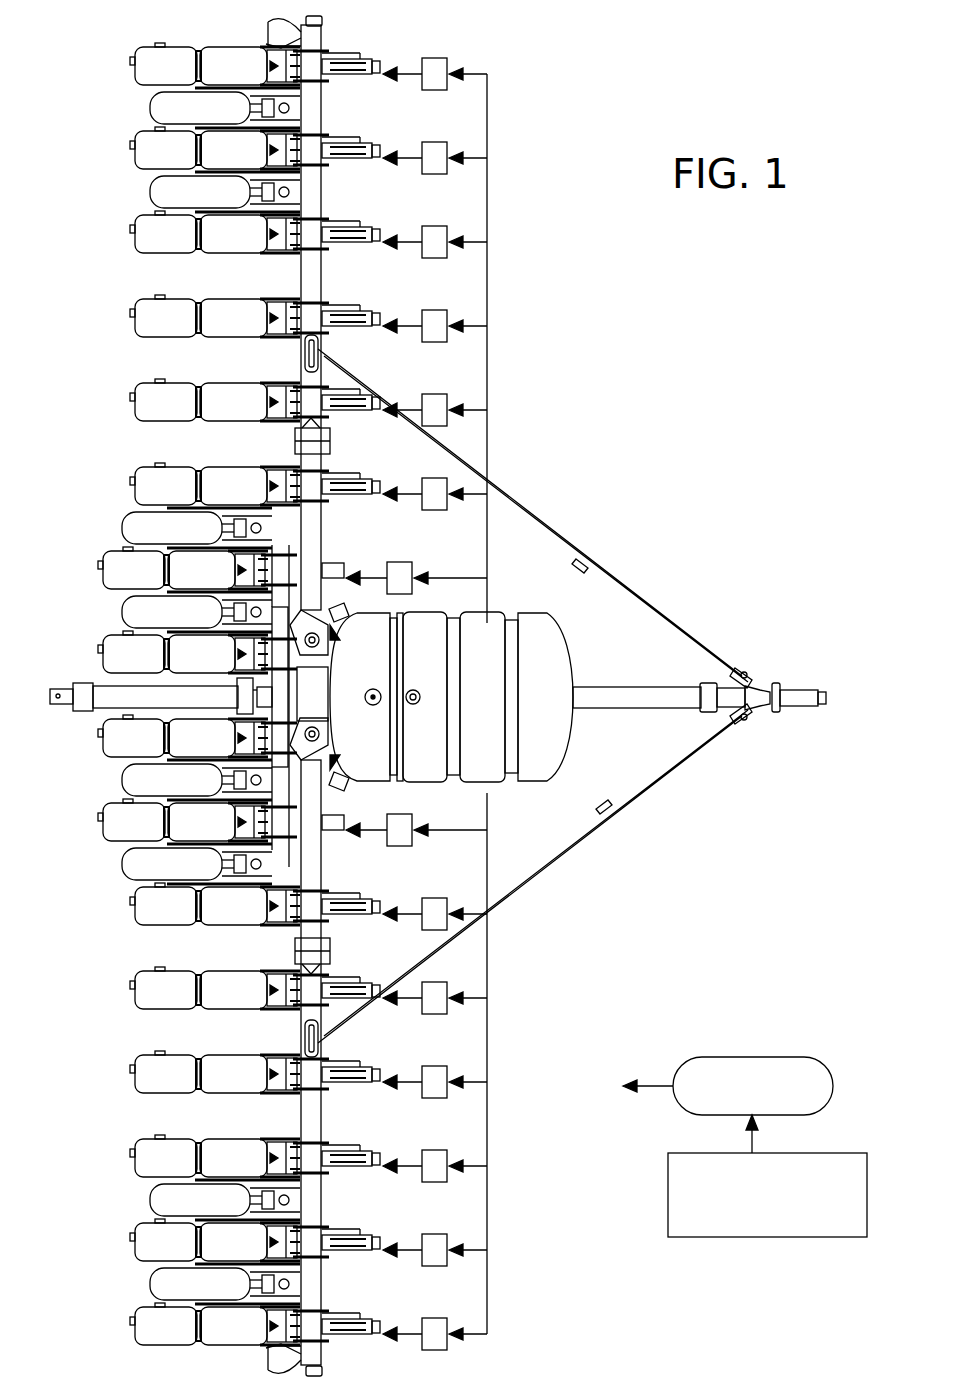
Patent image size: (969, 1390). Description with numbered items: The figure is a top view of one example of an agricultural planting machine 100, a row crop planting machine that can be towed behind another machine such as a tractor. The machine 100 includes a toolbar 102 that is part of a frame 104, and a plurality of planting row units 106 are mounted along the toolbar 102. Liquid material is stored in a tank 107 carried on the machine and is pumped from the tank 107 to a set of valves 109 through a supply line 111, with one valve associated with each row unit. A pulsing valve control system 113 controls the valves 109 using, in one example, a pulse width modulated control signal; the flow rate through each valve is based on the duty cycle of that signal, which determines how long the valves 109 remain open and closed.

The agricultural planting machine 100 is at (606, 352).
The toolbar 102 is at (322, 268).
The frame 104 is at (553, 512).
The planting row units 106 is at (143, 216).
The tank 107 is at (423, 622).
The valves 109 is at (412, 594).
The supply line 111 is at (489, 133).
The pulsing valve control system 113 is at (745, 1147).